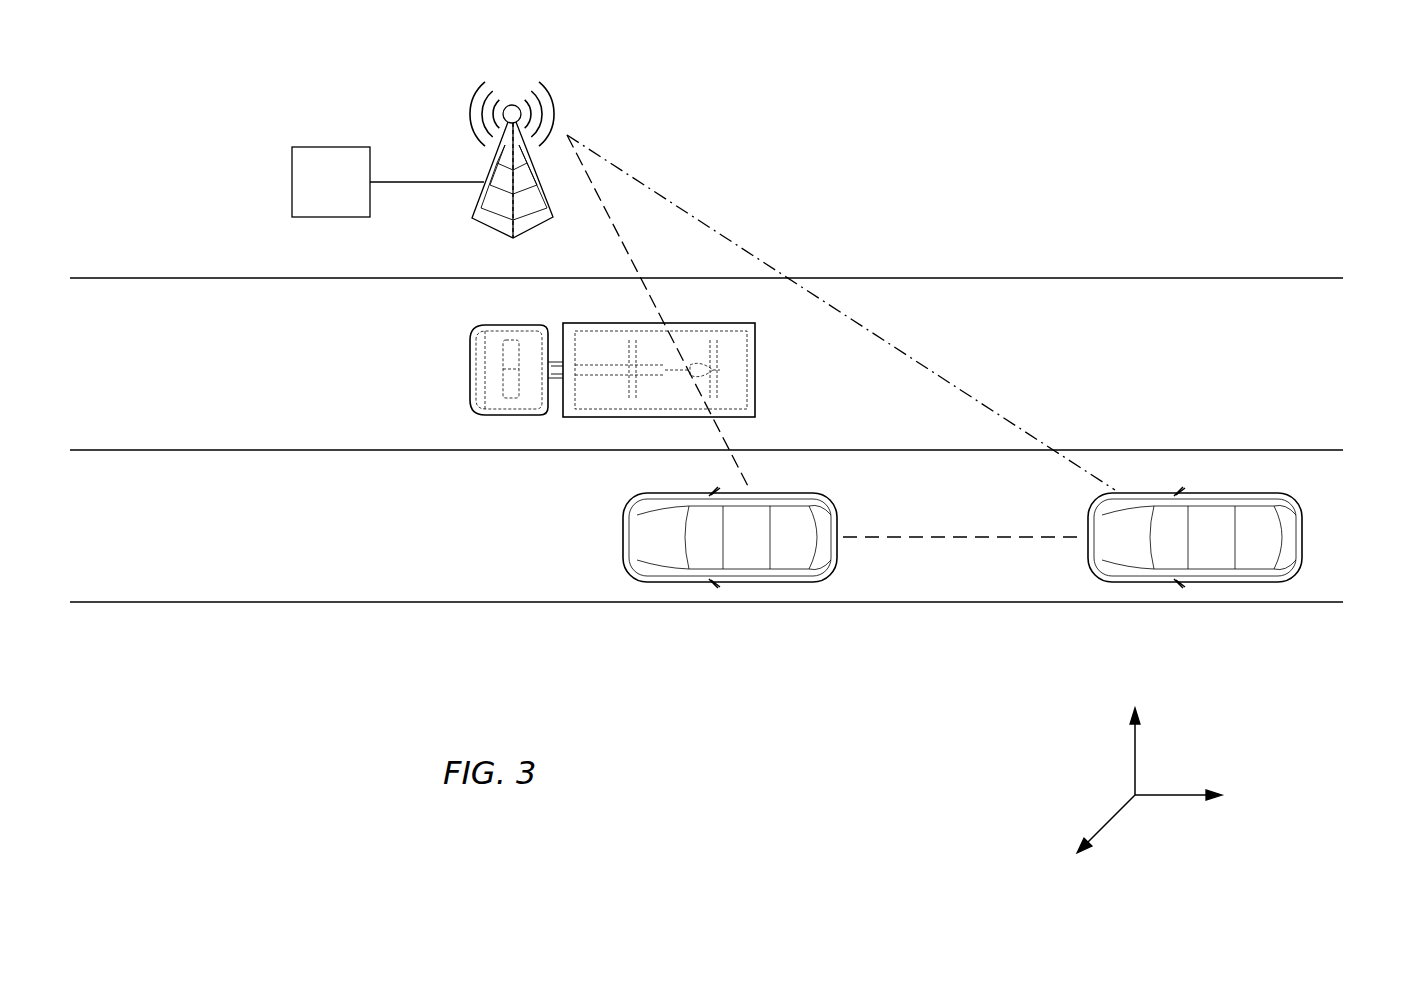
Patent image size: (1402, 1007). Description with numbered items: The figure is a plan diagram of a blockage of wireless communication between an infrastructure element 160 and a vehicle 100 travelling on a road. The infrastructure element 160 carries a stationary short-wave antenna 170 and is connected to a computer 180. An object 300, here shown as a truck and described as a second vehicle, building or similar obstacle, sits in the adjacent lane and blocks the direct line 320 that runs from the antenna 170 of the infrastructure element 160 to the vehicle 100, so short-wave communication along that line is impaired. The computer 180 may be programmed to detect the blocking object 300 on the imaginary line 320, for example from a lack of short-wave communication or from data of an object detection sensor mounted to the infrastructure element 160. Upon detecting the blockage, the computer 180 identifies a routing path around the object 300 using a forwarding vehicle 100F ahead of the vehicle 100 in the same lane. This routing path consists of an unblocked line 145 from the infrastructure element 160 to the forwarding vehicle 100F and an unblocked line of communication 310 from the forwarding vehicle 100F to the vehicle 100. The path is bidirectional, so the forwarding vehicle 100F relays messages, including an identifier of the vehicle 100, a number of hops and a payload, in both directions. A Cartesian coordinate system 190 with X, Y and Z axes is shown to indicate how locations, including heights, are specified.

The vehicle 100 is at (624, 526).
The forwarding vehicle 100F is at (1303, 525).
The line 145 is at (703, 218).
The infrastructure element 160 is at (497, 225).
The stationary short-wave antenna 170 is at (512, 104).
The computer 180 is at (388, 182).
The Cartesian coordinate system 190 is at (1075, 732).
The object 300 is at (466, 362).
The line of communication 310 is at (940, 530).
The direct line 320 is at (735, 445).